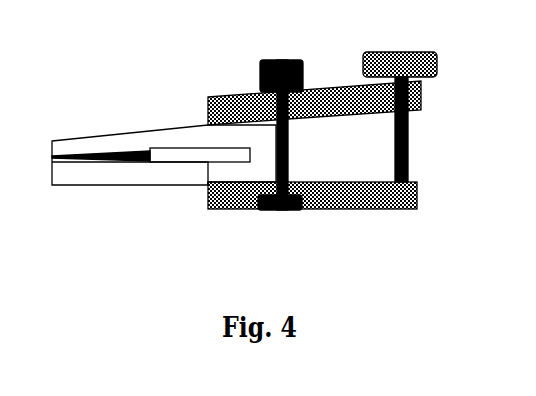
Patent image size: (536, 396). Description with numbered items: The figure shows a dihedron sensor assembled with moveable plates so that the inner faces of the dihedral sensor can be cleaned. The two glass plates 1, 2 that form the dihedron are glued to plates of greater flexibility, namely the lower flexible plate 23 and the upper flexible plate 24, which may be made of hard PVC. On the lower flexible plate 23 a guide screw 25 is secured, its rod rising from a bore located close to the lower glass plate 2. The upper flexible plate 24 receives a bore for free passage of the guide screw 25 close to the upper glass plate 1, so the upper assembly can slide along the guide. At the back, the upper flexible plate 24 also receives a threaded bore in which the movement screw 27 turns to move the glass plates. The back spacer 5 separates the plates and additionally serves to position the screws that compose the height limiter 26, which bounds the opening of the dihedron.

The upper glass plate 1 is at (164, 144).
The glass plate 2 is at (130, 196).
The back spacer 5 is at (151, 127).
The flexible plate 23 is at (315, 219).
The upper flexible plate 24 is at (314, 68).
The guide screw 25 is at (252, 227).
The height limiter 26 is at (246, 115).
The movement screw 27 is at (414, 117).